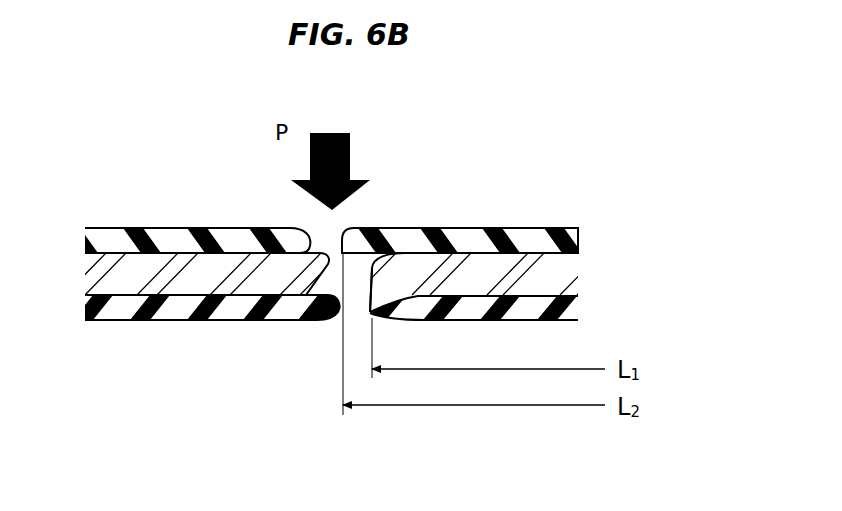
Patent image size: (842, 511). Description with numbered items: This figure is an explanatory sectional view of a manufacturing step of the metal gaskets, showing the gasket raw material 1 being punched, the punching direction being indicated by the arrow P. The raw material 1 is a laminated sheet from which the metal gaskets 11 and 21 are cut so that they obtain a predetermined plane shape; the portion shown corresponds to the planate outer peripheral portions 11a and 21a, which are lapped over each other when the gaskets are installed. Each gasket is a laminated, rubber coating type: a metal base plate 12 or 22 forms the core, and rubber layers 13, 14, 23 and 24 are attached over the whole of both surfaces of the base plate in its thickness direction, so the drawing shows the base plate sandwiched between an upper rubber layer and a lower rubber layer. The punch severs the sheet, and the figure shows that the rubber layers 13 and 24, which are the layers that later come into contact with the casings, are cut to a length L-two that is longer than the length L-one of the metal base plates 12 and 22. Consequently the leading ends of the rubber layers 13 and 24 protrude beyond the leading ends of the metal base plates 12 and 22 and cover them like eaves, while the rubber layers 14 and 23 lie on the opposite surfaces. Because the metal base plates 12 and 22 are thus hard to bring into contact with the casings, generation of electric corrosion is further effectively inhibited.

The gasket raw material 1 is at (172, 228).
The metal gasket 11 is at (522, 212).
The metal gasket 21 is at (520, 228).
The outer peripheral portion 11a is at (468, 208).
The outer peripheral portion 21a is at (467, 275).
The metal base plate 12 is at (522, 267).
The metal base plate 22 is at (552, 271).
The rubber layer 13 is at (524, 208).
The rubber layer 24 is at (575, 228).
The rubber layer 14 is at (536, 299).
The rubber layer 23 is at (578, 308).